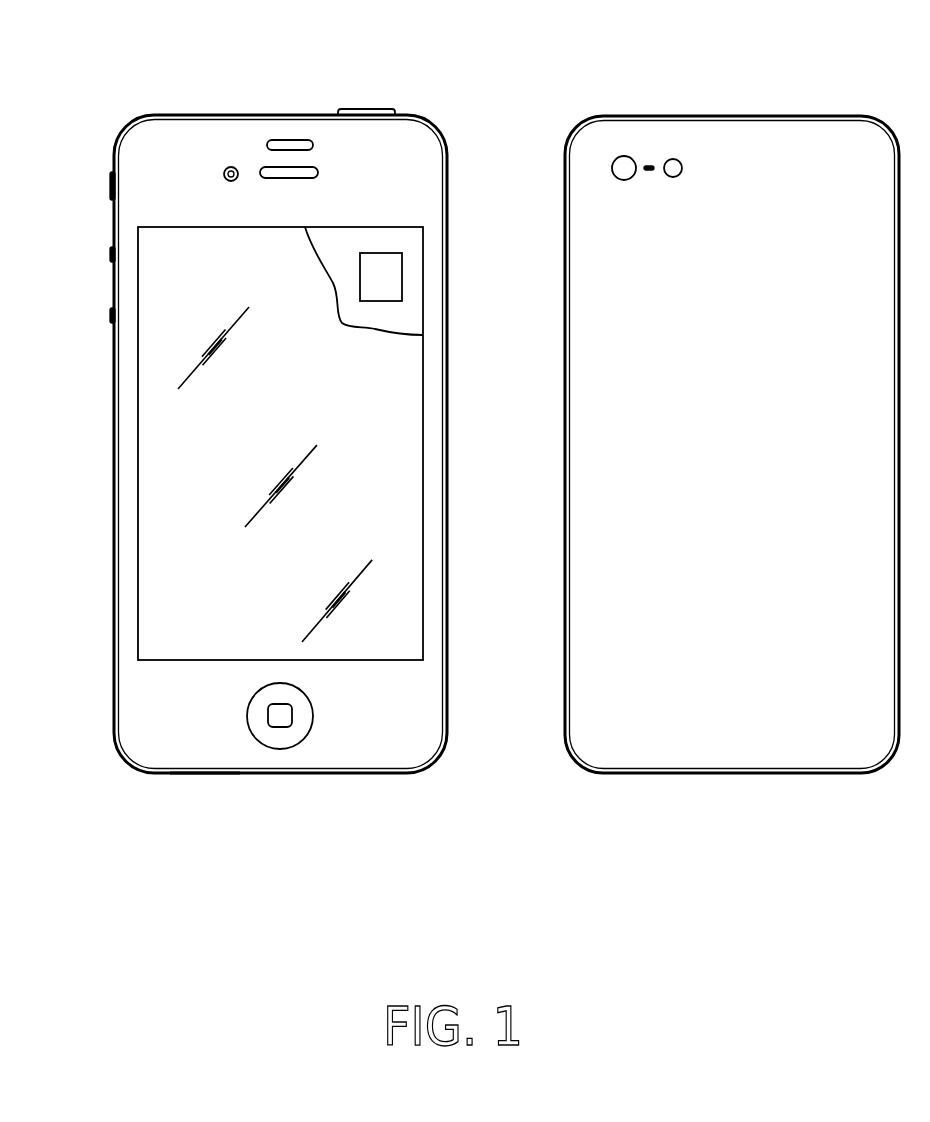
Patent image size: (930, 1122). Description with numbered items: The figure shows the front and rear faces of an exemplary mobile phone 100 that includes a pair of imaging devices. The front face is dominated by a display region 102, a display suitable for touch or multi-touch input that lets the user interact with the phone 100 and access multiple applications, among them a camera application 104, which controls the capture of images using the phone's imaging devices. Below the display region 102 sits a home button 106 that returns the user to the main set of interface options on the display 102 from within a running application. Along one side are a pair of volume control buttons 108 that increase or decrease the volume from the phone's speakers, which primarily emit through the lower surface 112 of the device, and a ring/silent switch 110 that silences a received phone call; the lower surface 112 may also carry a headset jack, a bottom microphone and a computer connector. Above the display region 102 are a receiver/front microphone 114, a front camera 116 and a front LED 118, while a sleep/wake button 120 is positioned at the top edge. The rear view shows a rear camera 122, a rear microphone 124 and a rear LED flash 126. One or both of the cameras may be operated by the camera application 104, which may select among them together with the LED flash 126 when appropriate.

The mobile phone 100 is at (274, 808).
The display region 102 is at (423, 507).
The camera application 104 is at (392, 281).
The home button 106 is at (300, 728).
The volume control buttons 108 is at (112, 257).
The ring/silent switch 110 is at (112, 192).
The lower surface 112 is at (203, 785).
The receiver/front microphone 114 is at (268, 168).
The front camera 116 is at (225, 170).
The front LED 118 is at (290, 140).
The sleep/wake button 120 is at (372, 108).
The rear camera 122 is at (613, 157).
The rear microphone 124 is at (650, 162).
The rear LED flash 126 is at (670, 158).